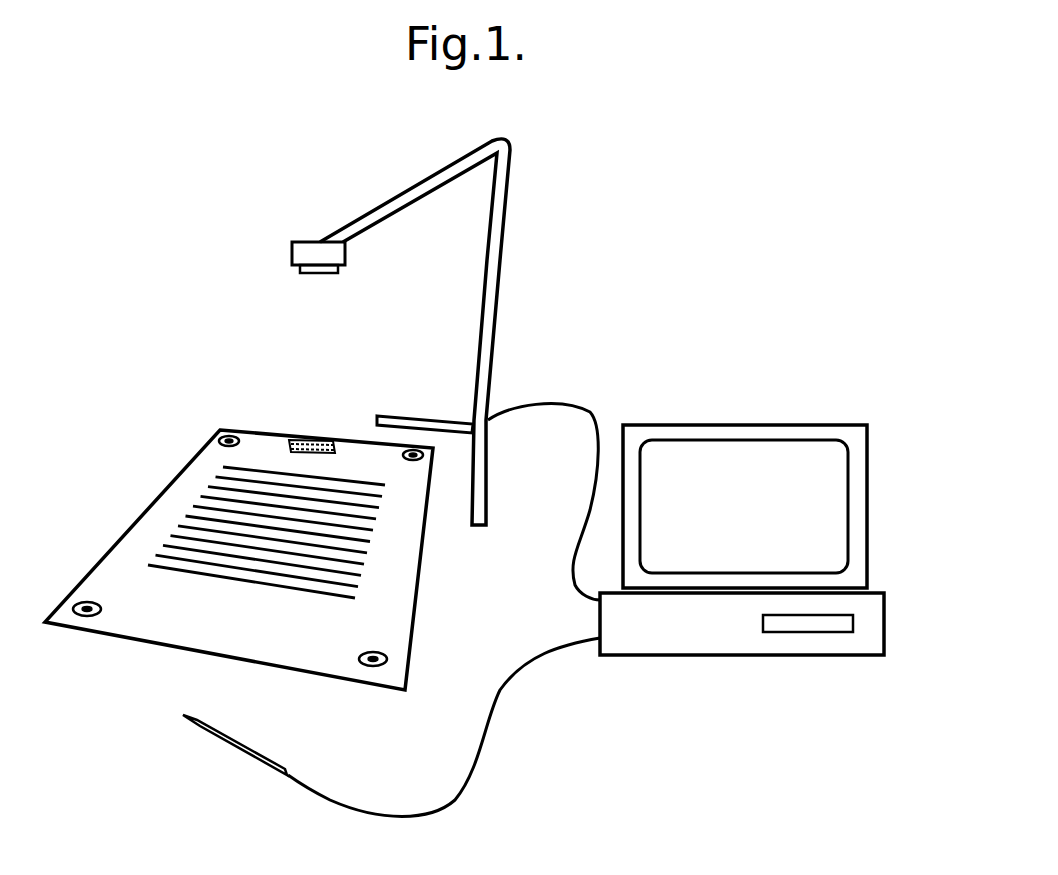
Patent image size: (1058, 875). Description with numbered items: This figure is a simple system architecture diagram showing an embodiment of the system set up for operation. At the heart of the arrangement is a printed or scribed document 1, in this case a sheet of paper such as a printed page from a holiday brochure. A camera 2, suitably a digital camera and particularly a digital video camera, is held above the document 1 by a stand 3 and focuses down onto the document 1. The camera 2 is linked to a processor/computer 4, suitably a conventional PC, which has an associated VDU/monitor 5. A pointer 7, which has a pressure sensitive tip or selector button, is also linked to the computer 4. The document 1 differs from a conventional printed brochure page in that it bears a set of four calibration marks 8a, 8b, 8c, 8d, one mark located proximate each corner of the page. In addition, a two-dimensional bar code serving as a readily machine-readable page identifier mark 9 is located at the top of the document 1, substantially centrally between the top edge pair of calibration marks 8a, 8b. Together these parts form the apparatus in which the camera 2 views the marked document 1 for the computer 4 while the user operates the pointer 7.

The document 1 is at (157, 514).
The camera 2 is at (305, 247).
The stand 3 is at (500, 233).
The processor/computer 4 is at (870, 620).
The VDU/monitor 5 is at (858, 512).
The pointer 7 is at (217, 740).
The calibration mark 8a is at (228, 437).
The calibration mark 8b is at (410, 460).
The calibration mark 8c is at (383, 666).
The calibration mark 8d is at (82, 616).
The page identifier mark 9 is at (315, 440).